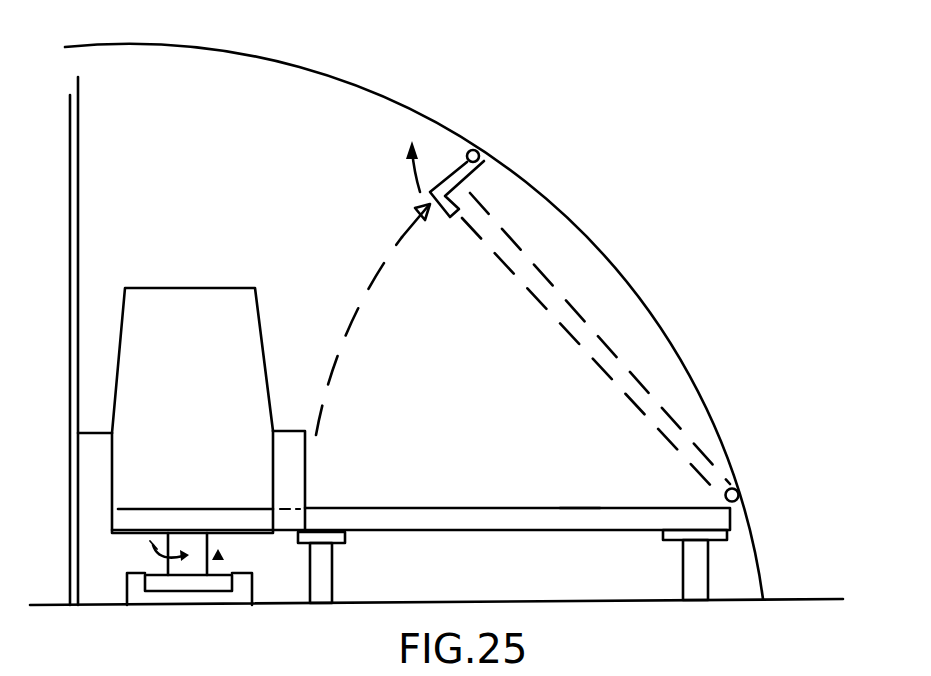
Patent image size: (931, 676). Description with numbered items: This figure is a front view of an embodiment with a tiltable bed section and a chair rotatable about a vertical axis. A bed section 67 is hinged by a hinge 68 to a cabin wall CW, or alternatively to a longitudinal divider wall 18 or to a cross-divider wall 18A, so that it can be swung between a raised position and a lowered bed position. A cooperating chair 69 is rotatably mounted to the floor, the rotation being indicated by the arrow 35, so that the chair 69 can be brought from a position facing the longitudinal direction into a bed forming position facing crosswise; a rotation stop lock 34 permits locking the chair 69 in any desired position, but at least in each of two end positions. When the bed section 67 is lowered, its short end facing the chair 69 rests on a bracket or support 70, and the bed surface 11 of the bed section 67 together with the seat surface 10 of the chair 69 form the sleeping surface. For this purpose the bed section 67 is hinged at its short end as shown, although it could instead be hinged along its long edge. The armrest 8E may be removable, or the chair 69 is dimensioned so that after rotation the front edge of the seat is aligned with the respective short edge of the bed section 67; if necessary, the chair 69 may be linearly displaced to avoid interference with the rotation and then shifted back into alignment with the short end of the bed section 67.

The longitudinal divider wall 18 is at (78, 197).
The cross-divider wall 18A is at (352, 257).
The chair 69 is at (184, 310).
The seat surface 10 is at (160, 509).
The armrest 8E is at (293, 457).
The bed section 67 is at (537, 295).
The bed surface 11 is at (565, 506).
The hinge 68 is at (740, 494).
The bracket or support 70 is at (343, 547).
The arrow indicating chair rotation 35 is at (160, 556).
The rotation stop lock 34 is at (218, 557).
The cabin wall CW is at (647, 307).